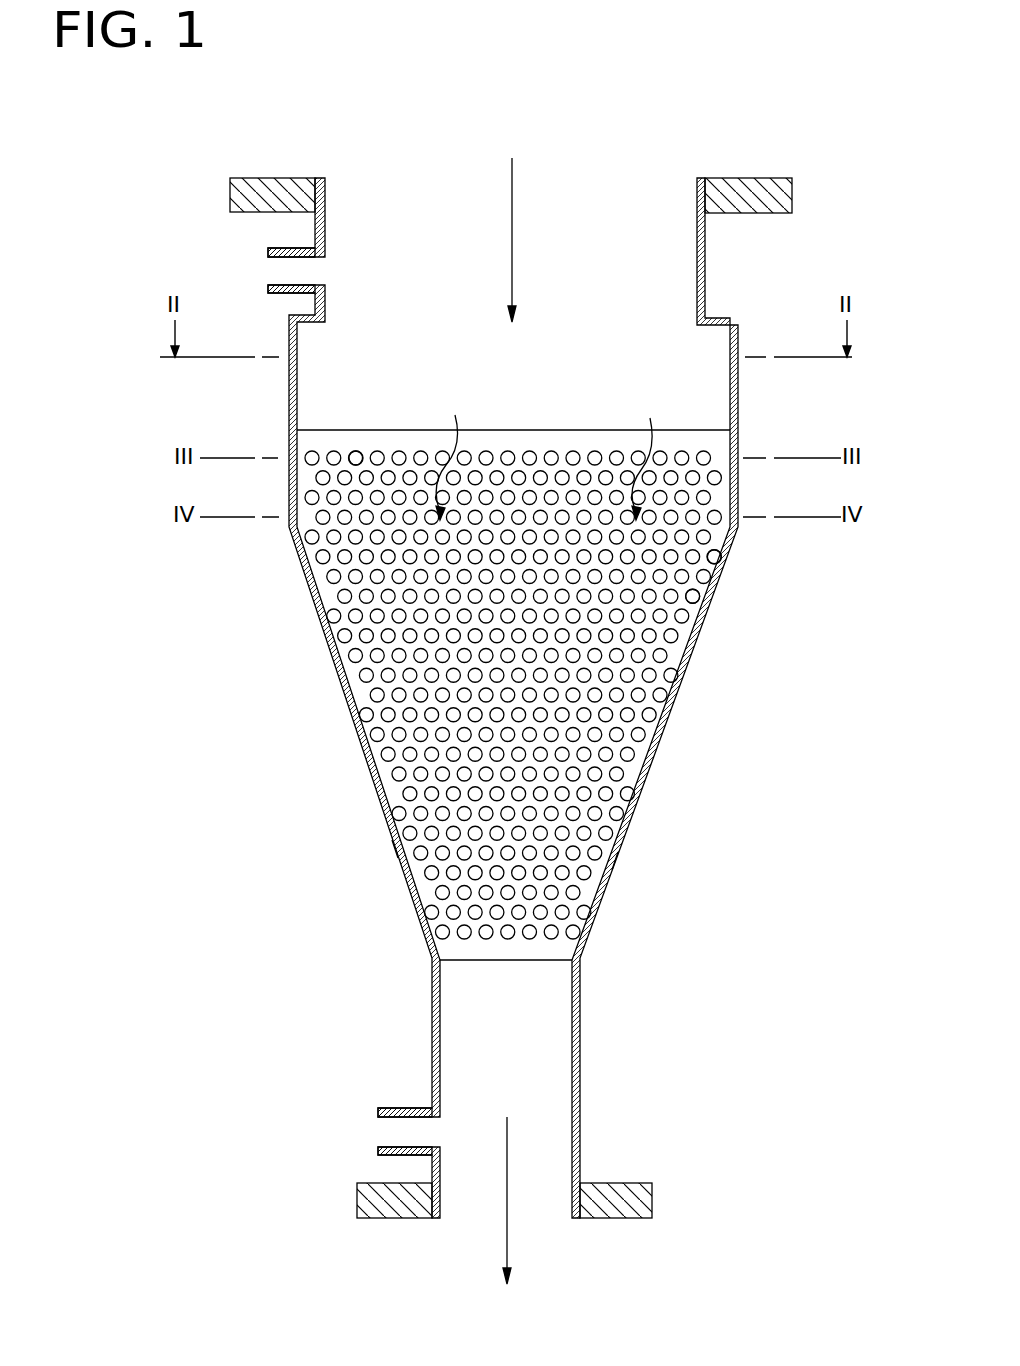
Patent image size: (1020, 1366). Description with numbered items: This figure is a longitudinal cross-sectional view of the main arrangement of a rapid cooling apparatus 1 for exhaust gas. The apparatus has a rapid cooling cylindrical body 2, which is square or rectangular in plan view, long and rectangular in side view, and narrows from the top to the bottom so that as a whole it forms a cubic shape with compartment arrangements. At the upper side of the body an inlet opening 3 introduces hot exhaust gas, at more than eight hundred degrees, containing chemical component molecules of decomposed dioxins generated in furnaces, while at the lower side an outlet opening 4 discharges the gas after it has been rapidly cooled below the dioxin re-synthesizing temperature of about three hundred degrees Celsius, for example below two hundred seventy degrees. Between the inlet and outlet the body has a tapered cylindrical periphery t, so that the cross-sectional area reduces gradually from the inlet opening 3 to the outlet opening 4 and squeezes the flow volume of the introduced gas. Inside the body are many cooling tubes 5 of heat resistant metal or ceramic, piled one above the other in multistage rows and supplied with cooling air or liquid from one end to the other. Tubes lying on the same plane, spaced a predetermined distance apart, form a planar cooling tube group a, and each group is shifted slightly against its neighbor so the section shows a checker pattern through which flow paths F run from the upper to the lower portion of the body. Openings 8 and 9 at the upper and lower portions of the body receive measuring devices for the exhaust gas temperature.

The rapid cooling apparatus 1 is at (770, 160).
The rapid cooling cylindrical body 2 is at (667, 723).
The inlet opening 3 is at (593, 248).
The outlet opening 4 is at (528, 1193).
The cooling tubes 5 is at (592, 456).
The opening for attaching measuring device 8 is at (278, 268).
The opening for attaching measuring device 9 is at (388, 1133).
The planar cooling tube group a is at (356, 456).
The flow paths F is at (546, 449).
The tapered cylindrical periphery t is at (393, 845).